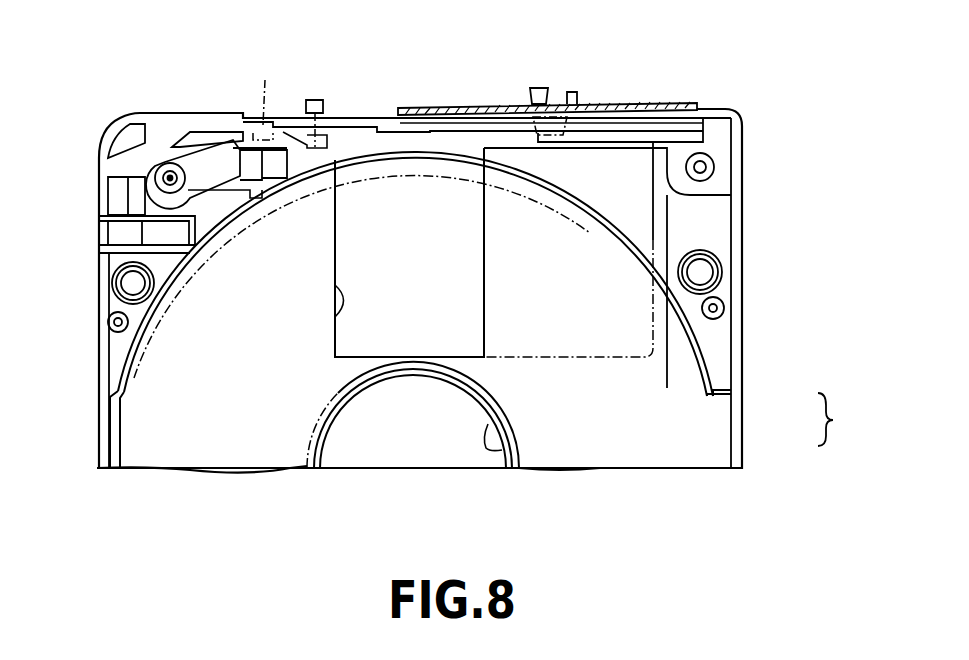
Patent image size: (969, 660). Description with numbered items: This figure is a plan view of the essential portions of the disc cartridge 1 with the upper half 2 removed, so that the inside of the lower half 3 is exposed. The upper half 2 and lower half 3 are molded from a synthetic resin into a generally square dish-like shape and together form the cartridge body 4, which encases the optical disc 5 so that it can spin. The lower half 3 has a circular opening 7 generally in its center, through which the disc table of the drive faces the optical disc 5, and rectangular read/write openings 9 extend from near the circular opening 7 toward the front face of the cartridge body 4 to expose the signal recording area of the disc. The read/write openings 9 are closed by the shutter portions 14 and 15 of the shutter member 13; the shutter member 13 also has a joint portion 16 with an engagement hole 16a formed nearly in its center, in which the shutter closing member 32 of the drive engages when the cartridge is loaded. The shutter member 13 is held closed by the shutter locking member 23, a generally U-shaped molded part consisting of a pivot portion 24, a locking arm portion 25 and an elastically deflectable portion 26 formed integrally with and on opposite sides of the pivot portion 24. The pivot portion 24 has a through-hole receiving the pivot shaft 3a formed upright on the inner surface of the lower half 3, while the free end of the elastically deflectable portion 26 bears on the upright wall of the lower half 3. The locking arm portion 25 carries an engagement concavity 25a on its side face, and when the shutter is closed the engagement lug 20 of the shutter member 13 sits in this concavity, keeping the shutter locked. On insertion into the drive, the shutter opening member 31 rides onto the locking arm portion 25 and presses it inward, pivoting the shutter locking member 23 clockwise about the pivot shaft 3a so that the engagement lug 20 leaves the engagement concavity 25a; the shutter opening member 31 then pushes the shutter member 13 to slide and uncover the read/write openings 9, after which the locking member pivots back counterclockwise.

The disc cartridge 1 is at (755, 218).
The upper half 2 is at (781, 437).
The lower half 3 is at (746, 411).
The pivot shaft 3a is at (152, 167).
The cartridge body 4 is at (862, 436).
The optical disc 5 is at (123, 428).
The circular opening 7 is at (503, 450).
The read/write openings 9 is at (334, 301).
The shutter member 13 is at (677, 100).
The shutter portion 14 is at (541, 358).
The shutter portion 15 is at (393, 289).
The joint portion 16 is at (473, 107).
The engagement hole 16a is at (573, 92).
The engagement lug 20 is at (427, 120).
The shutter locking member 23 is at (164, 162).
The pivot portion 24 is at (192, 198).
The locking arm portion 25 is at (221, 142).
The engagement concavity 25a is at (272, 96).
The elastically deflectable portion 26 is at (218, 193).
The shutter opening member 31 is at (318, 100).
The shutter closing member 32 is at (545, 88).